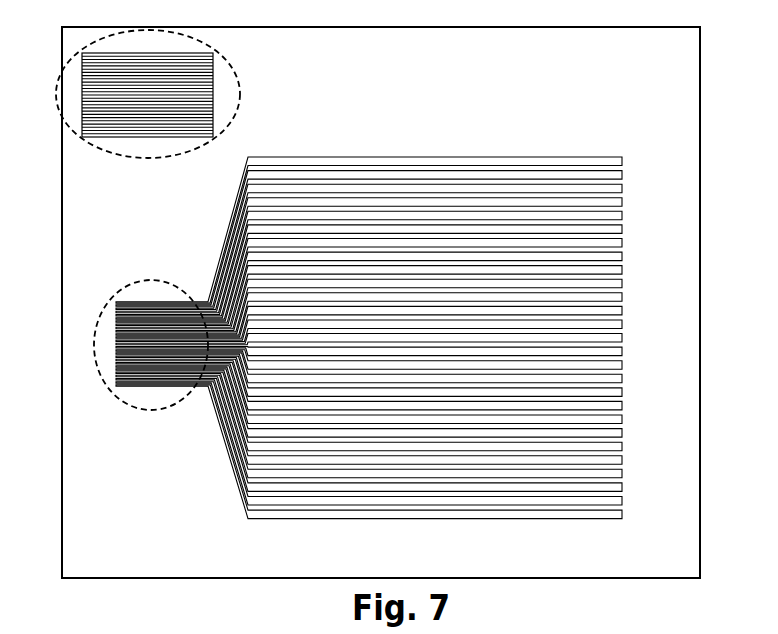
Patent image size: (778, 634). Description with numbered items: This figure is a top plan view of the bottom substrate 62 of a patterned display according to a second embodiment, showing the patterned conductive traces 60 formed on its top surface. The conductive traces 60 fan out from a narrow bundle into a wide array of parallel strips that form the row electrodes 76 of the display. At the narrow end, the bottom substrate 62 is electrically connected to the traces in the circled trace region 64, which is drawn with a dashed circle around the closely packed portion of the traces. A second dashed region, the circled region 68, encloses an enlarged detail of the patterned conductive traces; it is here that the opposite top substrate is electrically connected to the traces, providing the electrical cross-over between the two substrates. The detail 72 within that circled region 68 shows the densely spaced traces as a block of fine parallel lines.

The patterned conductive traces 60 is at (369, 300).
The bottom substrate 62 is at (673, 352).
The circled trace region 64 is at (96, 297).
The circled region 68 is at (100, 153).
The enlarged fiber bundle cross-section 72 is at (220, 98).
The row electrodes 76 is at (414, 153).